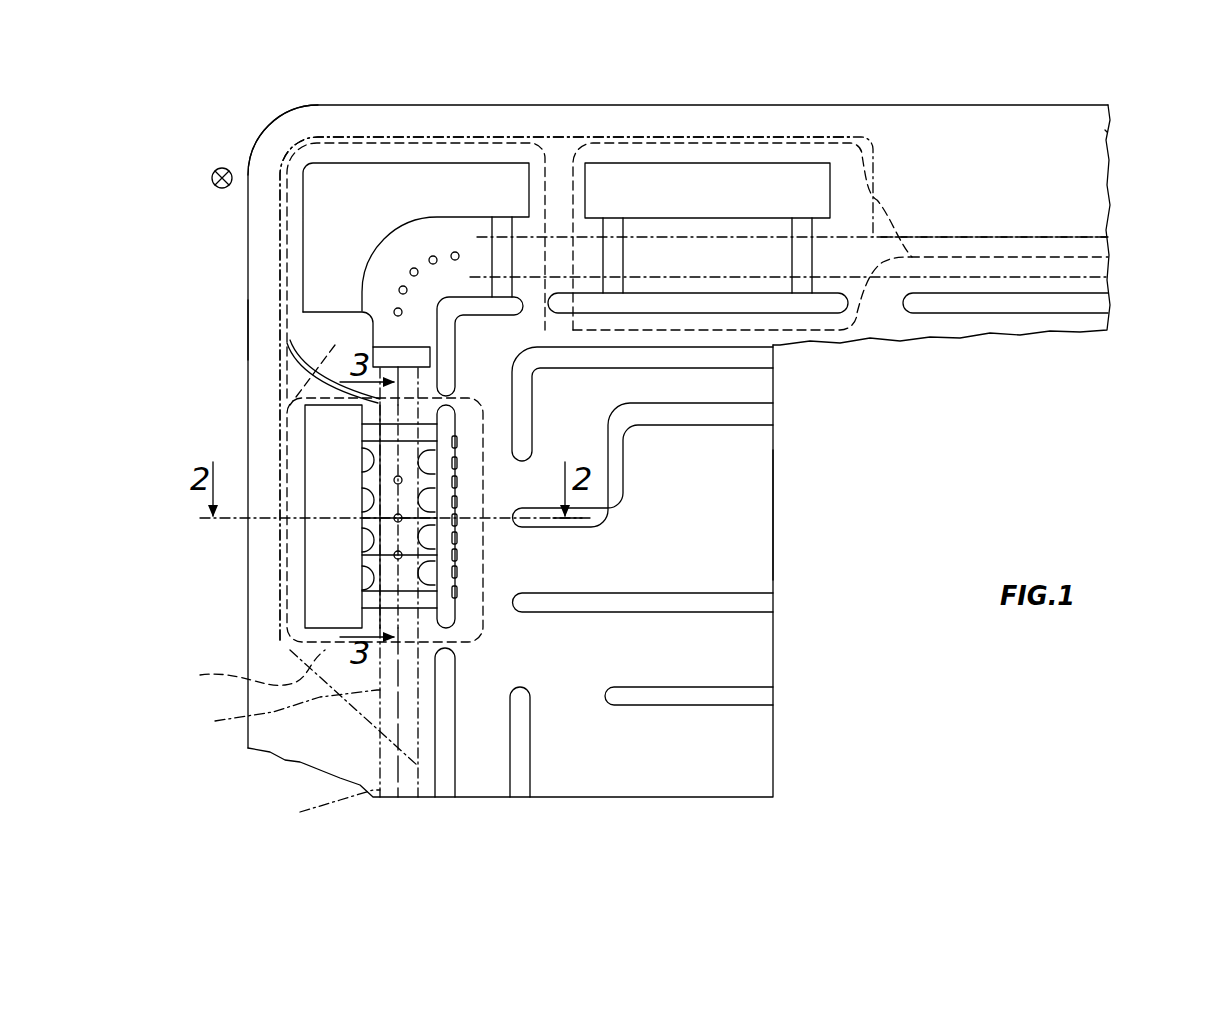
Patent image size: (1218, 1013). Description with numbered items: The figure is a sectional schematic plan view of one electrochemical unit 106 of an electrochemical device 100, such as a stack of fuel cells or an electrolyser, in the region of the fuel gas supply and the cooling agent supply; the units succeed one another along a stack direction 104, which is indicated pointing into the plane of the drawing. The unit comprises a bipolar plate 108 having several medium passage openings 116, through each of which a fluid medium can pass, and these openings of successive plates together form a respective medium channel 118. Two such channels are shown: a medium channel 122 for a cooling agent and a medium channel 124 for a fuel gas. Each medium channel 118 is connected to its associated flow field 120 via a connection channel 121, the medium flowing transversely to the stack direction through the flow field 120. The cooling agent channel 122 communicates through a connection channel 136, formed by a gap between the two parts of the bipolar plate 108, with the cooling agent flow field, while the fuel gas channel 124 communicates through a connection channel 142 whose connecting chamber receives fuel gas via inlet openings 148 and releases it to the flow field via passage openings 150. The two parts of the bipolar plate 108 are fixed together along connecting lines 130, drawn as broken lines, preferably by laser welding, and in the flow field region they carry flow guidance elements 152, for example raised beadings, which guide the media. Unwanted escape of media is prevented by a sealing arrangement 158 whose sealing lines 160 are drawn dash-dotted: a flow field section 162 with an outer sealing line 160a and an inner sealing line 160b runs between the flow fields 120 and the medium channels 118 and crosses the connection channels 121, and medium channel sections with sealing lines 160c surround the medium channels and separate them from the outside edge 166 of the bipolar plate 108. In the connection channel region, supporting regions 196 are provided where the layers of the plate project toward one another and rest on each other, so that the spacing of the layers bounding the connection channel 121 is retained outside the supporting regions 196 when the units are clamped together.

The electrochemical device 100 is at (241, 140).
The stack direction 104 is at (212, 178).
The electrochemical unit 106 is at (1110, 102).
The bipolar plate 108 is at (1105, 130).
The medium passage opening 116 is at (562, 308).
The medium channel 118 is at (566, 333).
The flow field 120 is at (696, 515).
The connection channel 121 is at (410, 255).
The medium channel for a cooling agent 122 is at (338, 286).
The medium channel for a fuel gas 124 is at (371, 516).
The connecting line 130 is at (355, 127).
The connection channel for cooling agents 136 is at (433, 255).
The connection channel for fuel gas 142 is at (394, 529).
The inlet opening 148 is at (390, 553).
The passage opening 150 is at (458, 593).
The flow guidance element 152 is at (512, 300).
The sealing arrangement 158 is at (376, 752).
The sealing line 160 is at (262, 112).
The outer sealing line 160a is at (1040, 235).
The inner sealing line 160b is at (1048, 293).
The sealing line of medium channel section 160c is at (316, 122).
The flow field section 162 is at (985, 235).
The outside edge 166 is at (248, 323).
The supporting region 196 is at (456, 253).